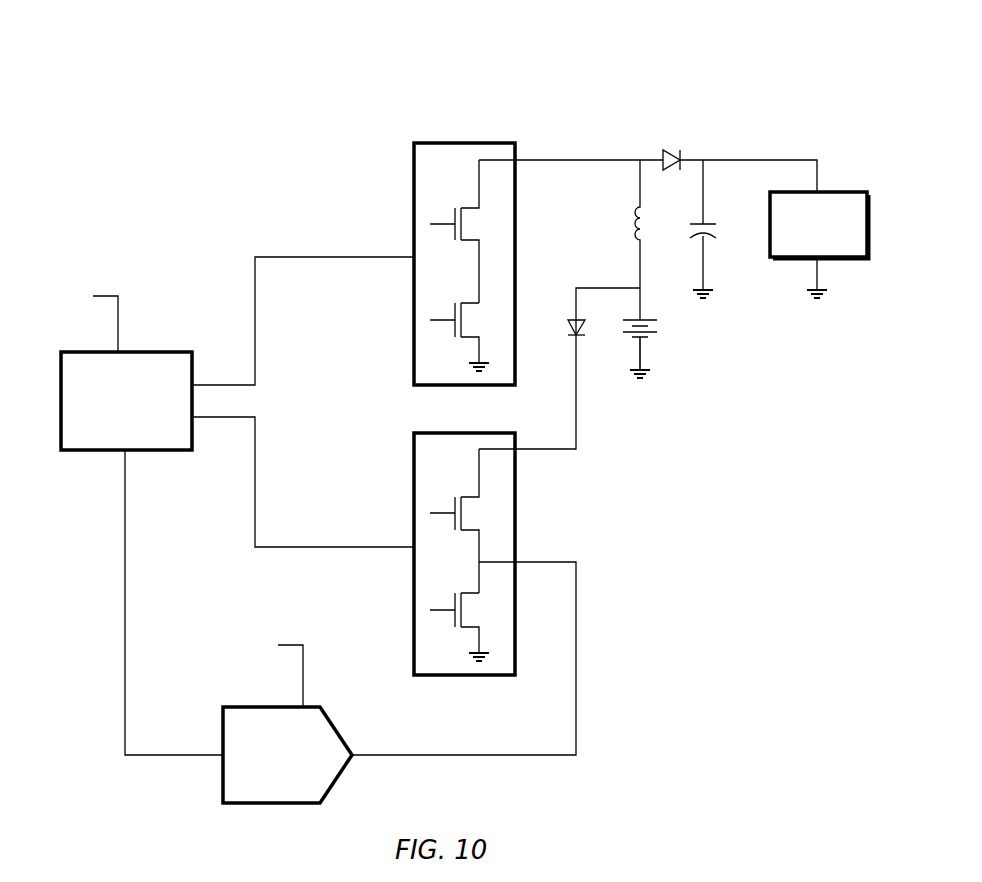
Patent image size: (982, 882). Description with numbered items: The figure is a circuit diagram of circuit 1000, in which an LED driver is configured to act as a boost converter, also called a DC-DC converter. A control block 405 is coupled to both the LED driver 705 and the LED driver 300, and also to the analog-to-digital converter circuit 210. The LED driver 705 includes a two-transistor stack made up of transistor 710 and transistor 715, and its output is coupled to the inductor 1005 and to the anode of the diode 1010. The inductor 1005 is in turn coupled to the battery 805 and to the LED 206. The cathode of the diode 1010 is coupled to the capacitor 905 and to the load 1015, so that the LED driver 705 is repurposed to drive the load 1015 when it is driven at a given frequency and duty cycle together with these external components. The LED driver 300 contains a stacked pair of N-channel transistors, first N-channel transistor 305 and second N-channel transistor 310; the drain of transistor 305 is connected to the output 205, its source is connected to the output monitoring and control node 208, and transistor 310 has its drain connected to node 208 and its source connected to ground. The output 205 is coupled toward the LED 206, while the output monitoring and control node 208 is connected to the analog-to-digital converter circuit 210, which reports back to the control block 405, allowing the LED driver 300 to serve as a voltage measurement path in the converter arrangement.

The circuit 1000 is at (782, 70).
The control block 405 is at (126, 368).
The analog-to-digital converter circuit 210 is at (252, 707).
The output monitoring and control node 208 is at (578, 640).
The output 205 is at (545, 448).
The LED 206 is at (572, 318).
The LED driver 705 is at (440, 143).
The transistor 710 is at (466, 208).
The transistor 715 is at (466, 303).
The LED driver 300 is at (440, 433).
The first N-channel transistor 305 is at (468, 497).
The second N-channel transistor 310 is at (468, 593).
The diode 1010 is at (675, 149).
The inductor 1005 is at (634, 218).
The battery 805 is at (648, 319).
The capacitor 905 is at (708, 224).
The load 1015 is at (819, 245).